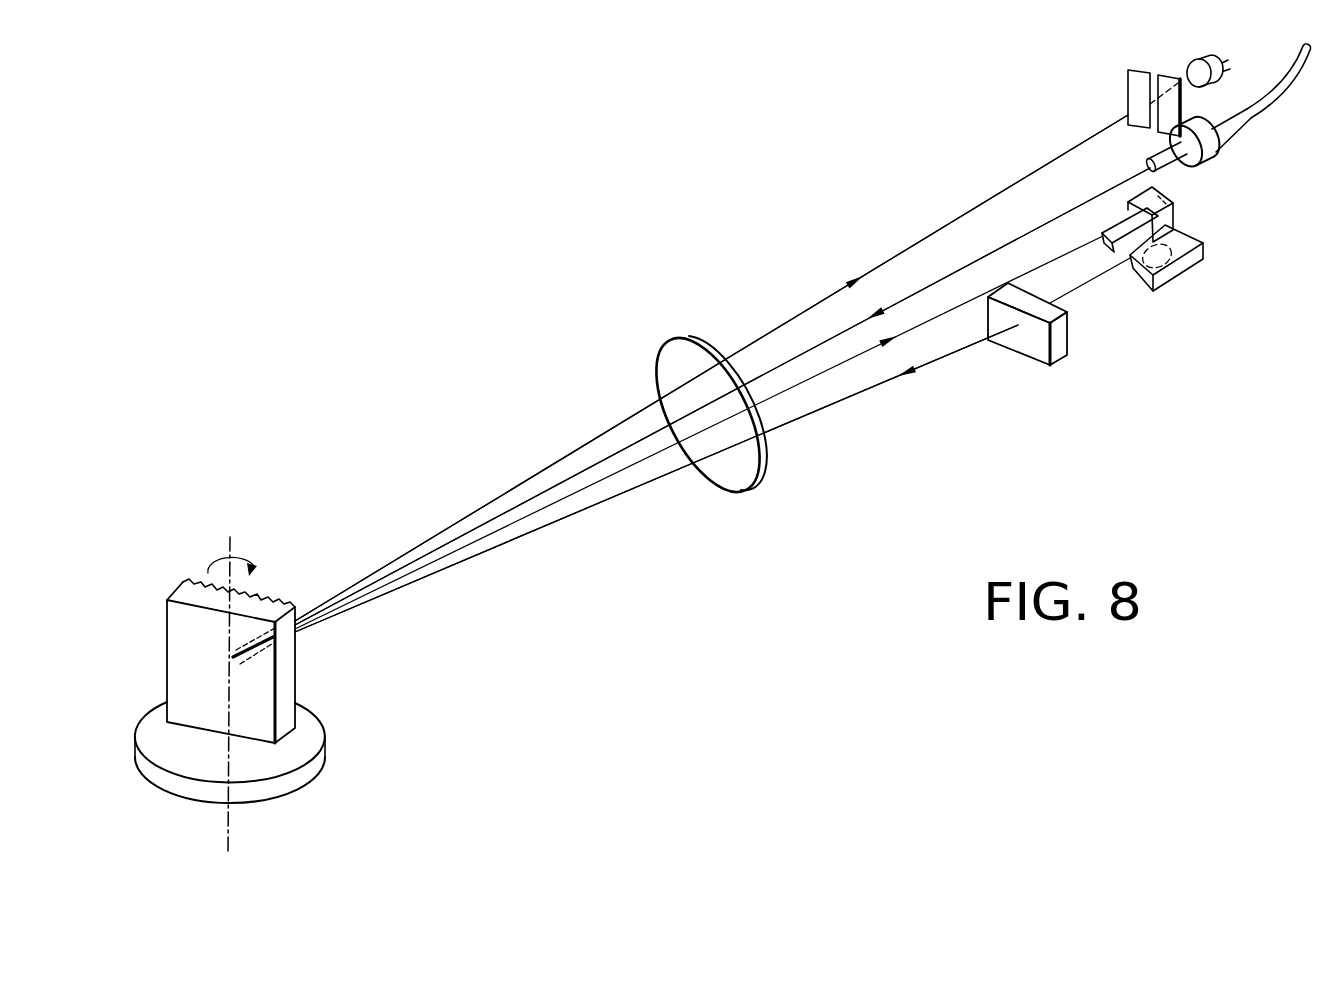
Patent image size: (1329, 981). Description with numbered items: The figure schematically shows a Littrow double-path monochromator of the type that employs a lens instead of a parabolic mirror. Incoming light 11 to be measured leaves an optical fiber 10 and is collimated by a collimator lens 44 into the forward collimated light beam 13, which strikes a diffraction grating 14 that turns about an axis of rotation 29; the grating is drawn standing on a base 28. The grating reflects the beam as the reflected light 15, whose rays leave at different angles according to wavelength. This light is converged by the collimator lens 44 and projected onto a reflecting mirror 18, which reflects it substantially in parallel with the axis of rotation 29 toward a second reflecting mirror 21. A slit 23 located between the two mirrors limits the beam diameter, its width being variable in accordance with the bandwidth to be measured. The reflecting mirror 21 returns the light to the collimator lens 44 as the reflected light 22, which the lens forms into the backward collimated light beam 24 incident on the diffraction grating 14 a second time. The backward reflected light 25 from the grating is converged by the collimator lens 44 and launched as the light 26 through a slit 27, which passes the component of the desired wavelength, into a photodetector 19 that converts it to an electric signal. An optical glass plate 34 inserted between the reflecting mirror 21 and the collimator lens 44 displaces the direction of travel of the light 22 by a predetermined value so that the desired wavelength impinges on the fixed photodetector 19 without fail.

The optical fiber 10 is at (1203, 160).
The incoming light 11 is at (1108, 189).
The forward collimated light beam 13 is at (605, 458).
The diffraction grating 14 is at (297, 663).
The reflected light 15 is at (608, 481).
The reflecting mirror 18 is at (1176, 194).
The photodetector 19 is at (1197, 60).
The reflecting mirror 21 is at (1176, 284).
The reflected light 22 is at (843, 402).
The slit 23 is at (1126, 255).
The backward collimated light beam 24 is at (655, 482).
The backward reflected light 25 is at (631, 417).
The light 26 is at (803, 316).
The slit 27 is at (1150, 68).
The rotary base 28 is at (327, 737).
The axis of rotation 29 is at (233, 546).
The optical glass plate 34 is at (1040, 357).
The collimator lens 44 is at (685, 337).